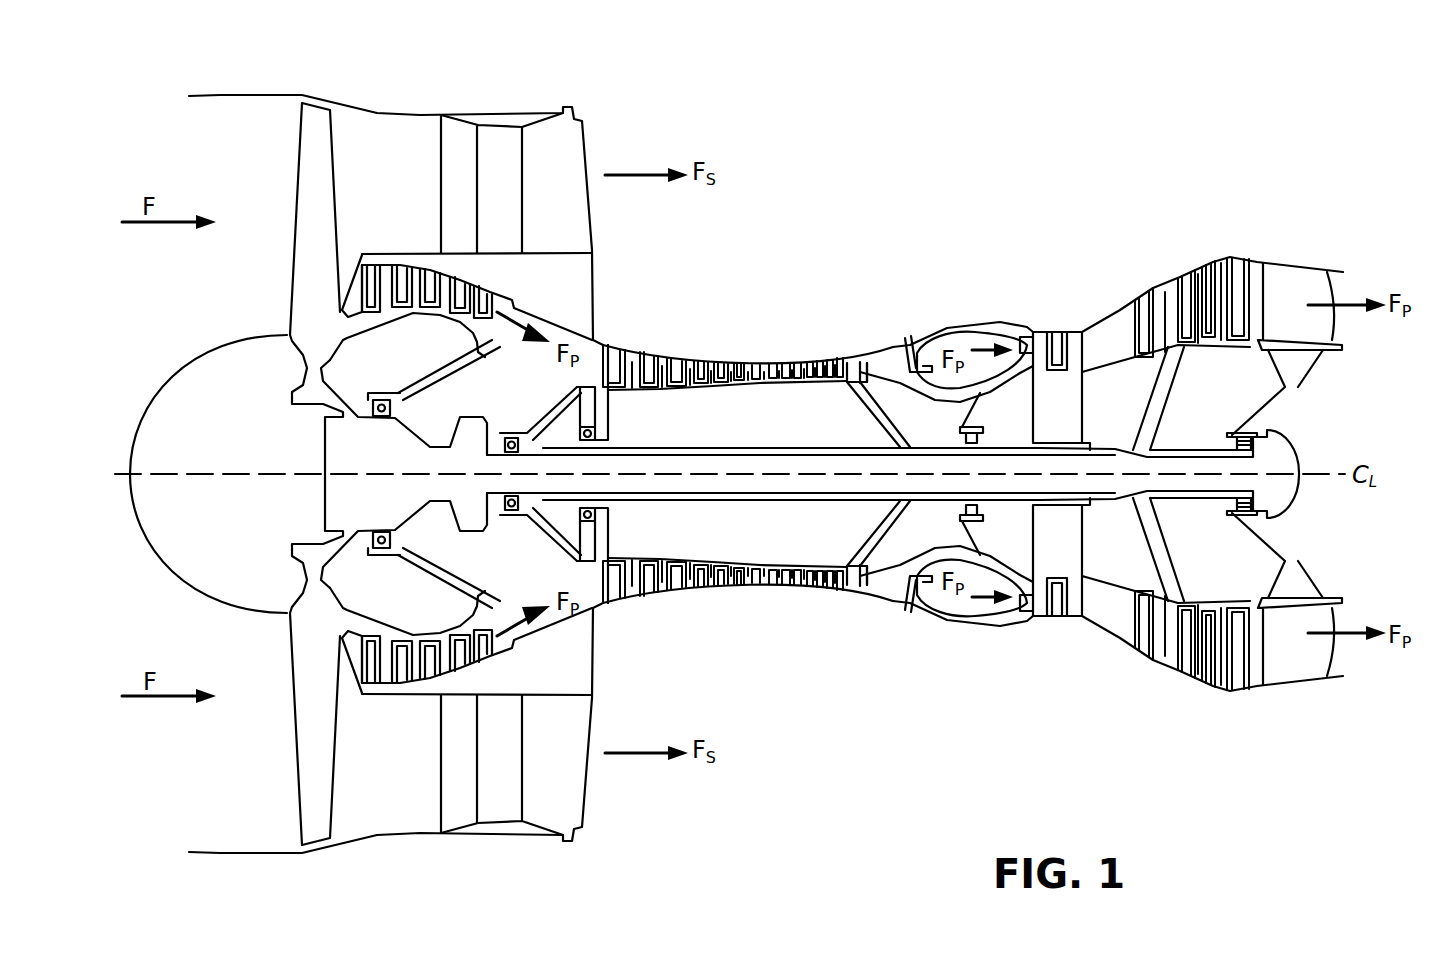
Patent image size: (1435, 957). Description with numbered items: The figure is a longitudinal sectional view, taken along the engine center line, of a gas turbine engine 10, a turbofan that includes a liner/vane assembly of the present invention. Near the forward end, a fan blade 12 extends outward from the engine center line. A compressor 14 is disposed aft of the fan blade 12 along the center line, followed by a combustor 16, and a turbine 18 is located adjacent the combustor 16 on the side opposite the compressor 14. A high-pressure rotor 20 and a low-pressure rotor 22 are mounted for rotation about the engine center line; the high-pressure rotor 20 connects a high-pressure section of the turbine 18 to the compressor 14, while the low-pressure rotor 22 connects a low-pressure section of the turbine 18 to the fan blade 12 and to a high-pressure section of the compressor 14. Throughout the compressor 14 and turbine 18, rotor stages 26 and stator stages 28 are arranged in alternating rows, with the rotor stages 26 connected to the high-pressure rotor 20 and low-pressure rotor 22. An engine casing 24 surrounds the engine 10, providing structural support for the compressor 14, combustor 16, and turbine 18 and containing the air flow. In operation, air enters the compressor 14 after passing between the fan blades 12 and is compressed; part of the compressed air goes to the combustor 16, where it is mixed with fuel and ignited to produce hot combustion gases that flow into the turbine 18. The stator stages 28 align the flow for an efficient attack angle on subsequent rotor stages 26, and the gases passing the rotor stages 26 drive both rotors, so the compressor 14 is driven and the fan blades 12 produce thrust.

The gas turbine engine 10 is at (166, 66).
The fan blade 12 is at (312, 194).
The compressor 14 is at (872, 872).
The combustor 16 is at (970, 333).
The turbine 18 is at (1270, 770).
The high-pressure rotor 20 is at (860, 510).
The low-pressure rotor 22 is at (755, 485).
The engine casing 24 is at (633, 346).
The rotor stages 26 is at (684, 362).
The stator stages 28 is at (666, 359).